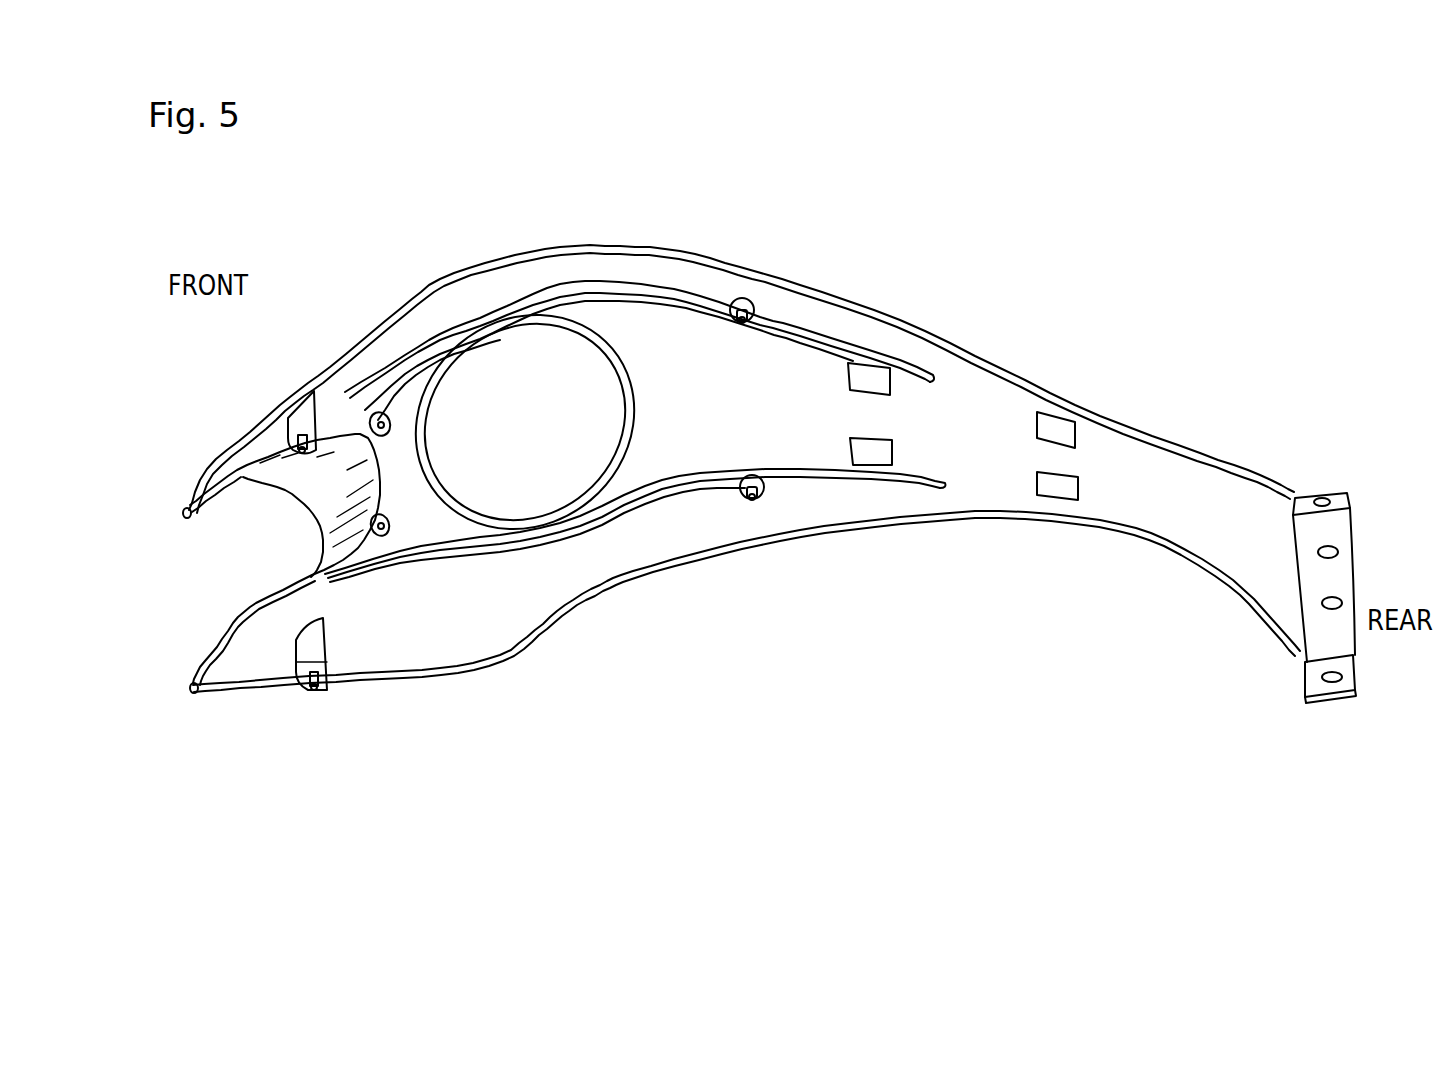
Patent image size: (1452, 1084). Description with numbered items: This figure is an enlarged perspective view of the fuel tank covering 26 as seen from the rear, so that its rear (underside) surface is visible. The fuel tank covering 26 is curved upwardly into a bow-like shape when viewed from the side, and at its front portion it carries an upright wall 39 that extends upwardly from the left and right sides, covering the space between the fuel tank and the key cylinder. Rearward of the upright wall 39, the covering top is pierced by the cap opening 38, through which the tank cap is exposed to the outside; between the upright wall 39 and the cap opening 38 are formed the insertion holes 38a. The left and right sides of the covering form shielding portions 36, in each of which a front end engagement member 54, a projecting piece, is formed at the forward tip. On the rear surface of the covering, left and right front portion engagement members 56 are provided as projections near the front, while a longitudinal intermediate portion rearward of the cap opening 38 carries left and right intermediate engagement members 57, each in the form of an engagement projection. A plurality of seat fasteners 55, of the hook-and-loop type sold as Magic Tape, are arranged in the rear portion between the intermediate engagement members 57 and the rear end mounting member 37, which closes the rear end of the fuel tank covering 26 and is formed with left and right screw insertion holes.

The fuel tank covering 26 is at (698, 222).
The shielding portion 36 is at (222, 468).
The rear end mounting member 37 is at (1330, 535).
The cap opening 38 is at (553, 315).
The insertion hole 38a is at (392, 514).
The upright wall 39 is at (290, 505).
The front end engagement member 54 is at (185, 517).
The seat fastener 55 is at (884, 455).
The front portion engagement member 56 is at (303, 438).
The intermediate engagement member 57 is at (758, 476).